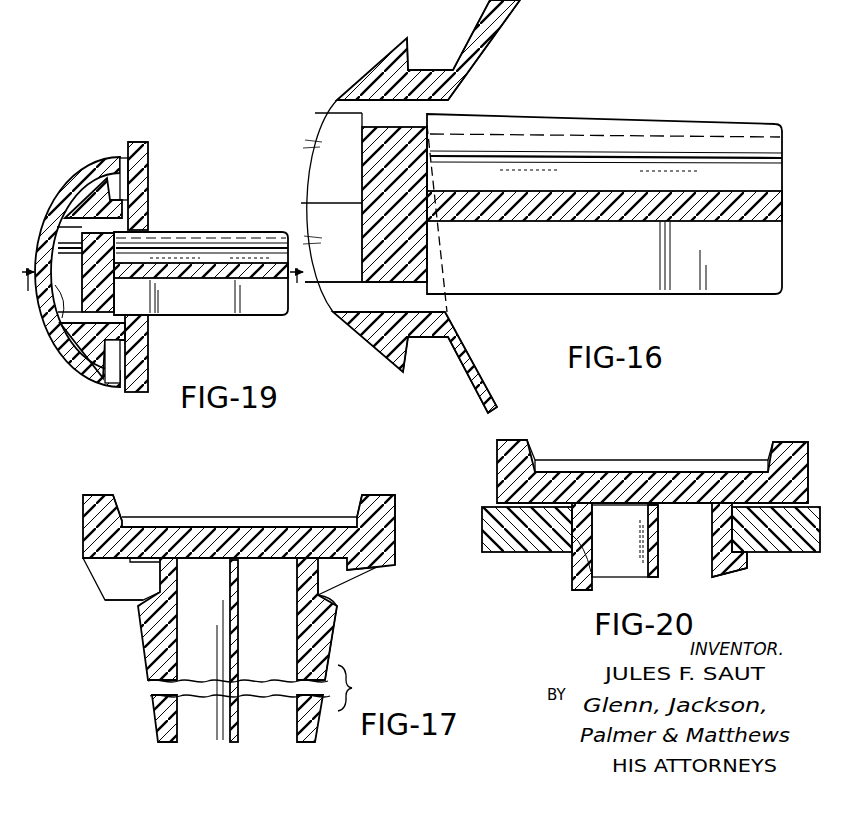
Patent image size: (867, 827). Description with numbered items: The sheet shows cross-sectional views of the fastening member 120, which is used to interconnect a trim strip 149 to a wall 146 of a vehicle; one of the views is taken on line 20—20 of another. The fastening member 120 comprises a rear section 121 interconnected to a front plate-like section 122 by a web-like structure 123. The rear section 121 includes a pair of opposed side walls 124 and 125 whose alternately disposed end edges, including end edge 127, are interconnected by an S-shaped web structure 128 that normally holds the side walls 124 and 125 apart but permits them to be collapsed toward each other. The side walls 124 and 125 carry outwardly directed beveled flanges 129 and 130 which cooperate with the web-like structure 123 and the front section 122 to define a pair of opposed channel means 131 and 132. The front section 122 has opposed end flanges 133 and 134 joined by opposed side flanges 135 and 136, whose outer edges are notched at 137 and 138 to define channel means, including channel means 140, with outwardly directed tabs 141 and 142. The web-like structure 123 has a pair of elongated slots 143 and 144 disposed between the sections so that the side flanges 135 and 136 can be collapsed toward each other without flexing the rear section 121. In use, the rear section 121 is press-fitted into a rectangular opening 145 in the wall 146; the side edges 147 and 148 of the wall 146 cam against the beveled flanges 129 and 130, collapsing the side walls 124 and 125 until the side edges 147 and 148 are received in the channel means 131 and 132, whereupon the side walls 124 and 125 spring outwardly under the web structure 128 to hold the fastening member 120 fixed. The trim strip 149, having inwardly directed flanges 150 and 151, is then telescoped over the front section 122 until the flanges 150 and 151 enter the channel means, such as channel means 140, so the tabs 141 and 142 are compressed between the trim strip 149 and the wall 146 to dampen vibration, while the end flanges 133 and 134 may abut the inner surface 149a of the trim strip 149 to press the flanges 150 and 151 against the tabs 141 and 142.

In FIG. 19, the section line 20— 20 is at (163, 293).
In FIG. 16, the fastening member 120 is at (628, 82).
In FIG. 19, the fastening member 120 is at (228, 212).
In FIG. 17, the fastening member 120 is at (307, 471).
In FIG. 20, the fastening member 120 is at (707, 442).
In FIG. 16, the rear section 121 is at (740, 106).
In FIG. 19, the rear section 121 is at (244, 217).
In FIG. 17, the rear section 121 is at (135, 682).
In FIG. 20, the rear section 121 is at (650, 570).
In FIG. 16, the front plate-like section 122 is at (346, 61).
In FIG. 17, the front plate-like section 122 is at (414, 510).
In FIG. 20, the front plate-like section 122 is at (550, 443).
In FIG. 16, the web-like structure 123 is at (362, 137).
In FIG. 19, the web-like structure 123 is at (113, 221).
In FIG. 17, the web-like structure 123 is at (289, 537).
In FIG. 20, the web-like structure 123 is at (621, 480).
In FIG. 17, the side wall 124 is at (290, 737).
In FIG. 20, the side wall 124 is at (712, 579).
In FIG. 16, the side wall 125 is at (748, 289).
In FIG. 19, the side wall 125 is at (274, 311).
In FIG. 17, the side wall 125 is at (178, 733).
In FIG. 20, the side wall 125 is at (591, 591).
In FIG. 16, the end edge 127 is at (521, 117).
In FIG. 19, the end edge 127 is at (207, 230).
In FIG. 16, the S-shaped web structure 128 is at (649, 150).
In FIG. 19, the S-shaped web structure 128 is at (245, 238).
In FIG. 17, the S-shaped web structure 128 is at (196, 735).
In FIG. 20, the S-shaped web structure 128 is at (617, 573).
In FIG. 17, the beveled flange 129 is at (136, 605).
In FIG. 20, the beveled flange 129 is at (575, 561).
In FIG. 17, the beveled flange 130 is at (335, 605).
In FIG. 20, the beveled flange 130 is at (748, 556).
In FIG. 17, the channel means 131 is at (142, 584).
In FIG. 17, the channel means 132 is at (351, 583).
In FIG. 17, the end flange 133 is at (108, 493).
In FIG. 20, the end flange 133 is at (510, 440).
In FIG. 16, the end flange 134 is at (323, 116).
In FIG. 19, the end flange 134 is at (67, 240).
In FIG. 17, the end flange 134 is at (374, 495).
In FIG. 20, the end flange 134 is at (779, 441).
In FIG. 16, the side flange 135 is at (389, 50).
In FIG. 19, the side flange 135 is at (77, 178).
In FIG. 16, the side flange 136 is at (374, 345).
In FIG. 19, the side flange 136 is at (92, 354).
In FIG. 16, the notch 137 is at (409, 43).
In FIG. 16, the notch 138 is at (403, 360).
In FIG. 16, the channel means 140 is at (473, 0).
In FIG. 16, the tab 141 is at (500, 8).
In FIG. 19, the tab 141 is at (124, 157).
In FIG. 16, the tab 142 is at (492, 382).
In FIG. 19, the tab 142 is at (130, 393).
In FIG. 17, the tab 142 is at (366, 598).
In FIG. 16, the elongated slot 143 is at (424, 107).
In FIG. 16, the elongated slot 144 is at (430, 307).
In FIG. 19, the elongated slot 144 is at (110, 319).
In FIG. 17, the elongated slot 144 is at (140, 563).
In FIG. 19, the rectangular opening 145 is at (126, 233).
In FIG. 19, the wall 146 is at (145, 152).
In FIG. 20, the wall 146 is at (500, 544).
In FIG. 20, the side edge 147 is at (725, 566).
In FIG. 20, the side edge 148 is at (590, 560).
In FIG. 19, the trim strip 149 is at (93, 166).
In FIG. 19, the inner surface 149a is at (62, 282).
In FIG. 19, the inwardly directed flange 150 is at (121, 158).
In FIG. 19, the inwardly directed flange 151 is at (110, 352).